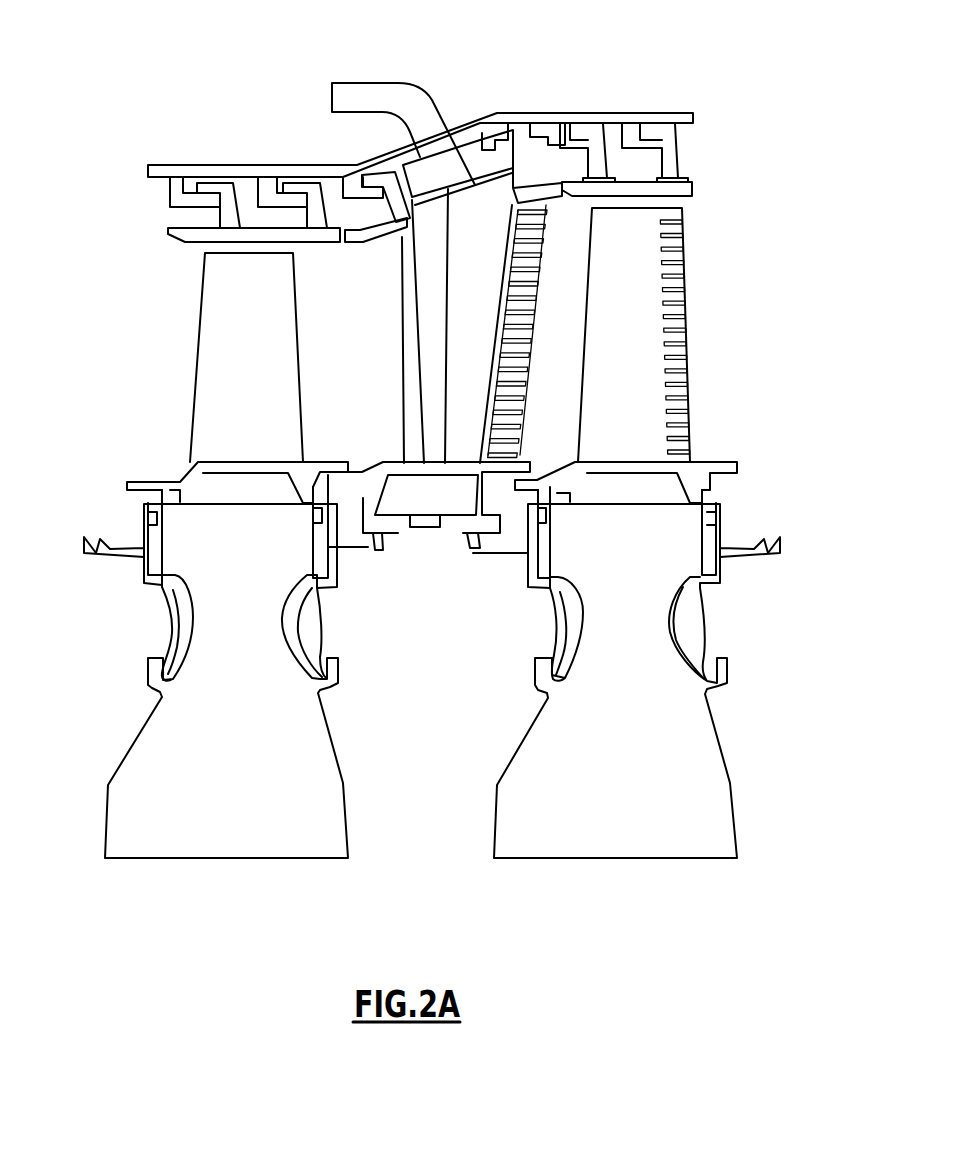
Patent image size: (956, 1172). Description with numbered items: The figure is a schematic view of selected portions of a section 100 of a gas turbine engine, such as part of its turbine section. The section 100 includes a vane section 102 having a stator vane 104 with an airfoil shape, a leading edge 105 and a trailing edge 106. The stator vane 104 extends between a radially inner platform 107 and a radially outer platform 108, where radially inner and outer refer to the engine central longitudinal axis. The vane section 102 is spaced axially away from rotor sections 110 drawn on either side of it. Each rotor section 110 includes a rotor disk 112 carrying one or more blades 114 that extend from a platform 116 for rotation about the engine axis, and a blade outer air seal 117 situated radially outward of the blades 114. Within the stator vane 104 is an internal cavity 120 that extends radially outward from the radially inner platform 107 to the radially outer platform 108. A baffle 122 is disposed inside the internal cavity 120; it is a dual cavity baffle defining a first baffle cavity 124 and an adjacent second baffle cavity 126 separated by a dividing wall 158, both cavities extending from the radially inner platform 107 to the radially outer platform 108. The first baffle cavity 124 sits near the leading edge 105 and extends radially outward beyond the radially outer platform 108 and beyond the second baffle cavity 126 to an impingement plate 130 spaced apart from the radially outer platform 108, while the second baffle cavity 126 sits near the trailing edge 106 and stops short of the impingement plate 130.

The section 100 is at (588, 72).
The vane section 102 is at (378, 314).
The stator vane 104 is at (412, 377).
The leading edge 105 is at (402, 342).
The trailing edge 106 is at (532, 347).
The radially inner platform 107 is at (402, 467).
The radially outer platform 108 is at (360, 240).
The rotor sections 110 is at (155, 352).
The rotor disk 112 is at (127, 787).
The blades 114 is at (217, 312).
The platform 116 is at (183, 473).
The blade outer air seal 117 is at (185, 240).
The internal cavity 120 is at (478, 283).
The baffle 122 is at (473, 378).
The first baffle cavity 124 is at (430, 245).
The second baffle cavity 126 is at (490, 256).
The impingement plate 130 is at (455, 130).
The dividing wall 158 is at (450, 307).